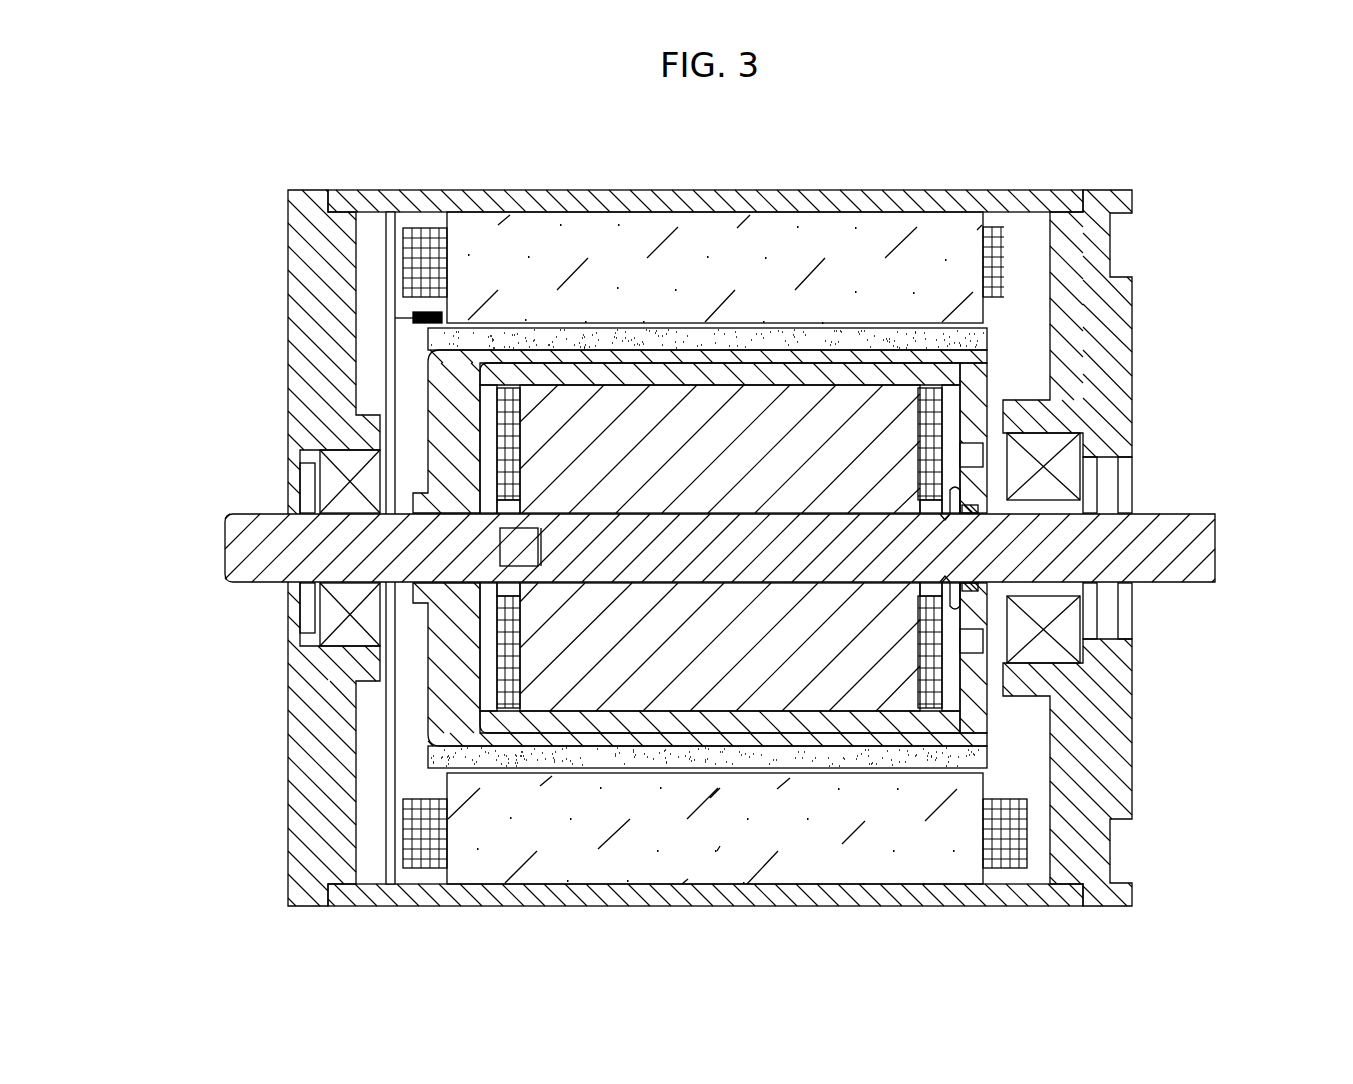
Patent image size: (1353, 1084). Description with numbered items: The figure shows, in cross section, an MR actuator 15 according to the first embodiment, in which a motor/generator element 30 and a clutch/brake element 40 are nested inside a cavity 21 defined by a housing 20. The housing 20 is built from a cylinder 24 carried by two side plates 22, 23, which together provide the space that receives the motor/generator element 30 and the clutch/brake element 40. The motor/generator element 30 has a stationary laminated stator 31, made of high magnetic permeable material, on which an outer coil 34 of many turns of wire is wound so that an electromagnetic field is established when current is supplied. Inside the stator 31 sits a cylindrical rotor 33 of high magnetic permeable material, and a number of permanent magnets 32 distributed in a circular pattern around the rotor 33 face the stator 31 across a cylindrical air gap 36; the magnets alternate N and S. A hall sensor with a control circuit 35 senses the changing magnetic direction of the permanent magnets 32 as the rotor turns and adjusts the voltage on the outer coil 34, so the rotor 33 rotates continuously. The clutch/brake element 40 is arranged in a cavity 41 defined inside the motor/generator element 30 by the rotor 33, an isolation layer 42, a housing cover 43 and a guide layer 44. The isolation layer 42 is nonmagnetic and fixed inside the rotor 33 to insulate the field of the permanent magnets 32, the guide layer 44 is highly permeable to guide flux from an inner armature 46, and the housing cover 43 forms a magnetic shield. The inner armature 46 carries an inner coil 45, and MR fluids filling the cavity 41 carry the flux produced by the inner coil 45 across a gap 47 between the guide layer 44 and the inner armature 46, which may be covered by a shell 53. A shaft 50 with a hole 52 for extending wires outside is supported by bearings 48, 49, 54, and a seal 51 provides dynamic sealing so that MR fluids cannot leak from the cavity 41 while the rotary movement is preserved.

The MR actuator 15 is at (1185, 218).
The housing 20 is at (283, 182).
The cavity 21 is at (1020, 372).
The side plate 22 is at (1108, 293).
The side plate 23 is at (315, 247).
The cylinder 24 is at (688, 200).
The motor/generator element 30 is at (1017, 315).
The stator 31 is at (865, 240).
The permanent magnets 32 is at (912, 343).
The rotor 33 is at (465, 410).
The outer coil 34 is at (418, 272).
The control circuit 35 is at (388, 345).
The air gap 36 is at (953, 774).
The clutch/brake element 40 is at (947, 672).
The cavity 41 is at (947, 473).
The isolation layer 42 is at (938, 733).
The housing cover 43 is at (972, 612).
The guide layer 44 is at (483, 723).
The inner coil 45 is at (500, 655).
The inner armature 46 is at (530, 441).
The gap 47 is at (477, 708).
The bearing 48 is at (333, 617).
The bearing 49 is at (537, 528).
The shaft 50 is at (287, 542).
The seal 51 is at (1090, 540).
The hole 52 is at (977, 551).
The shell 53 is at (930, 586).
The bearing 54 is at (1067, 466).